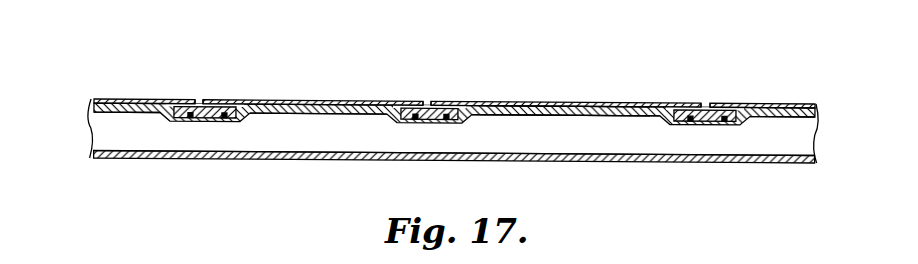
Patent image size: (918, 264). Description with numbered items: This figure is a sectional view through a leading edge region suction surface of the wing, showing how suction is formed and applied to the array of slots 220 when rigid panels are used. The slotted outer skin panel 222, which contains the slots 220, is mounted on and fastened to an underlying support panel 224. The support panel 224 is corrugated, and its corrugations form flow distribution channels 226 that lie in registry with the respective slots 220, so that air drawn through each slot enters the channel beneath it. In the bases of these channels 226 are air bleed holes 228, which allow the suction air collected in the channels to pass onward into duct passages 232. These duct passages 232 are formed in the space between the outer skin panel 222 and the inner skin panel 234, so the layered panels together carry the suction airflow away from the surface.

The slots 220 is at (196, 98).
The slotted outer skin panel 222 is at (273, 100).
The support panel 224 is at (593, 100).
The flow distribution channels 226 is at (440, 101).
The air bleed holes 228 is at (408, 120).
The duct passages 232 is at (549, 132).
The inner skin panel 234 is at (304, 160).